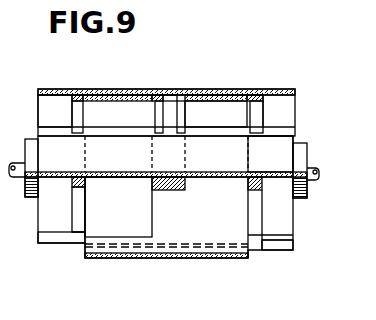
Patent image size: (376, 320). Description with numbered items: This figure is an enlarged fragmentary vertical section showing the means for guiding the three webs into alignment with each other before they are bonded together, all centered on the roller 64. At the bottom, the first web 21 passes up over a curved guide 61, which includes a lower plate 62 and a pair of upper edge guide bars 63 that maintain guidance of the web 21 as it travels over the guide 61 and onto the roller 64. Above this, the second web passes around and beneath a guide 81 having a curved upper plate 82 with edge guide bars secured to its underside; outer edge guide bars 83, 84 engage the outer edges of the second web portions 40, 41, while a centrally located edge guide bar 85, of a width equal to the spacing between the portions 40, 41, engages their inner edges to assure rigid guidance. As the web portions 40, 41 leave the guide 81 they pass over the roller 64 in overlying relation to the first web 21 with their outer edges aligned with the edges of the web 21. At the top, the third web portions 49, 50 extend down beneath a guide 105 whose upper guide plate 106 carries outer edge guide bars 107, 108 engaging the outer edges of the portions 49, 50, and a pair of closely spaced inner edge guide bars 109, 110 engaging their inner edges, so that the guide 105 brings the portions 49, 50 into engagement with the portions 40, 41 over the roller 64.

The guide 105 is at (297, 88).
The outer edge guide bar 108 is at (60, 99).
The outer third web portion 50 is at (104, 101).
The inner edge guide bar 110 is at (145, 102).
The inner edge guide bar 109 is at (174, 101).
The upper guide plate 106 is at (210, 101).
The outer edge guide bar 107 is at (262, 94).
The outer third web portion 49 is at (200, 106).
The roller 64 is at (306, 197).
The second web portion 40 is at (220, 179).
The guide 81 is at (76, 171).
The edge guide bar 85 is at (170, 191).
The outer edge guide bar 83 is at (263, 190).
The outer edge guide bar 84 is at (72, 186).
The upper edge guide bar 63 is at (75, 233).
The second web portion 41 is at (116, 179).
The first web 21 is at (200, 259).
The curved guide 61 is at (74, 245).
The lower plate 62 is at (280, 250).
The curved upper plate 82 is at (284, 173).